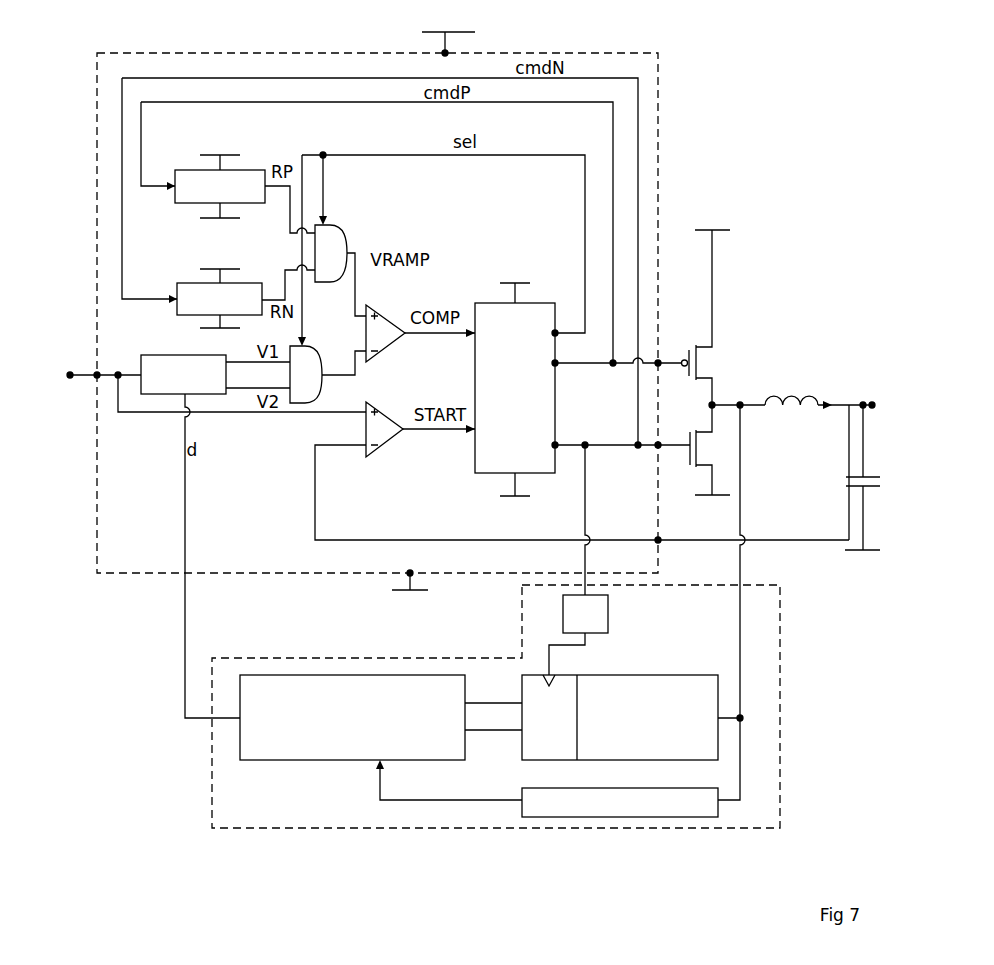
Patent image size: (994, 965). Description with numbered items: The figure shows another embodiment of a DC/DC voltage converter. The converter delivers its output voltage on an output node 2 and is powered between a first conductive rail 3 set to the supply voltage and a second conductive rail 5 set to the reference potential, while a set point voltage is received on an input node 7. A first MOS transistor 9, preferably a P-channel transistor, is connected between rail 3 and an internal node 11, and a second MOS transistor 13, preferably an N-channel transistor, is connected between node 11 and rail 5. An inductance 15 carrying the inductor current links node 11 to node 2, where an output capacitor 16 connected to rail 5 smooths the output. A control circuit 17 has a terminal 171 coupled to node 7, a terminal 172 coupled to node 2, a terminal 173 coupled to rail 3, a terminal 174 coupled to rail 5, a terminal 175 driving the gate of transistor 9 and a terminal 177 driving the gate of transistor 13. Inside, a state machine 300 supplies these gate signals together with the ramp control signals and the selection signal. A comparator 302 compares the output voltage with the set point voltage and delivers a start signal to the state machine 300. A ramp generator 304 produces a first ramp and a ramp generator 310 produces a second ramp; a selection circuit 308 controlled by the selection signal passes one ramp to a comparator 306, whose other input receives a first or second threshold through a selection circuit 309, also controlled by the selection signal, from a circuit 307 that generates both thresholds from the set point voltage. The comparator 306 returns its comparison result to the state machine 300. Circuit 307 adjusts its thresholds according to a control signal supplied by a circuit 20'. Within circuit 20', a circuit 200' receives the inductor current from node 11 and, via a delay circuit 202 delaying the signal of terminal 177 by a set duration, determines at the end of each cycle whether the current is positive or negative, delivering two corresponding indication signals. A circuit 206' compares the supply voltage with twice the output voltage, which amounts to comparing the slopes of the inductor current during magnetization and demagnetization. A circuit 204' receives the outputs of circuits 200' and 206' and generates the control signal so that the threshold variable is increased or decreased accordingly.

The output node 2 is at (872, 403).
The first conductive rail 3 is at (475, 32).
The second conductive rail 5 is at (428, 590).
The input node 7 is at (70, 372).
The first MOS transistor 9 is at (705, 355).
The internal node 11 is at (714, 403).
The second MOS transistor 13 is at (705, 447).
The inductance 15 is at (815, 385).
The output capacitor 16 is at (878, 480).
The control circuit 17 is at (630, 53).
The terminal 171 is at (100, 375).
The terminal 172 is at (656, 542).
The terminal 173 is at (447, 53).
The terminal 174 is at (412, 573).
The terminal 175 is at (658, 360).
The terminal 177 is at (658, 448).
The circuit 20' is at (496, 728).
The circuit 200' is at (632, 697).
The delay circuit 202 is at (608, 614).
The circuit 204' is at (381, 743).
The circuit 206' is at (548, 788).
The state machine 300 is at (515, 390).
The comparator 302 is at (390, 435).
The ramp generator 304 is at (220, 185).
The comparator 306 is at (385, 322).
The voltage generation circuit 307 is at (175, 365).
The selection circuit 308 is at (342, 235).
The selection circuit 309 is at (305, 355).
The ramp generator 310 is at (219, 300).